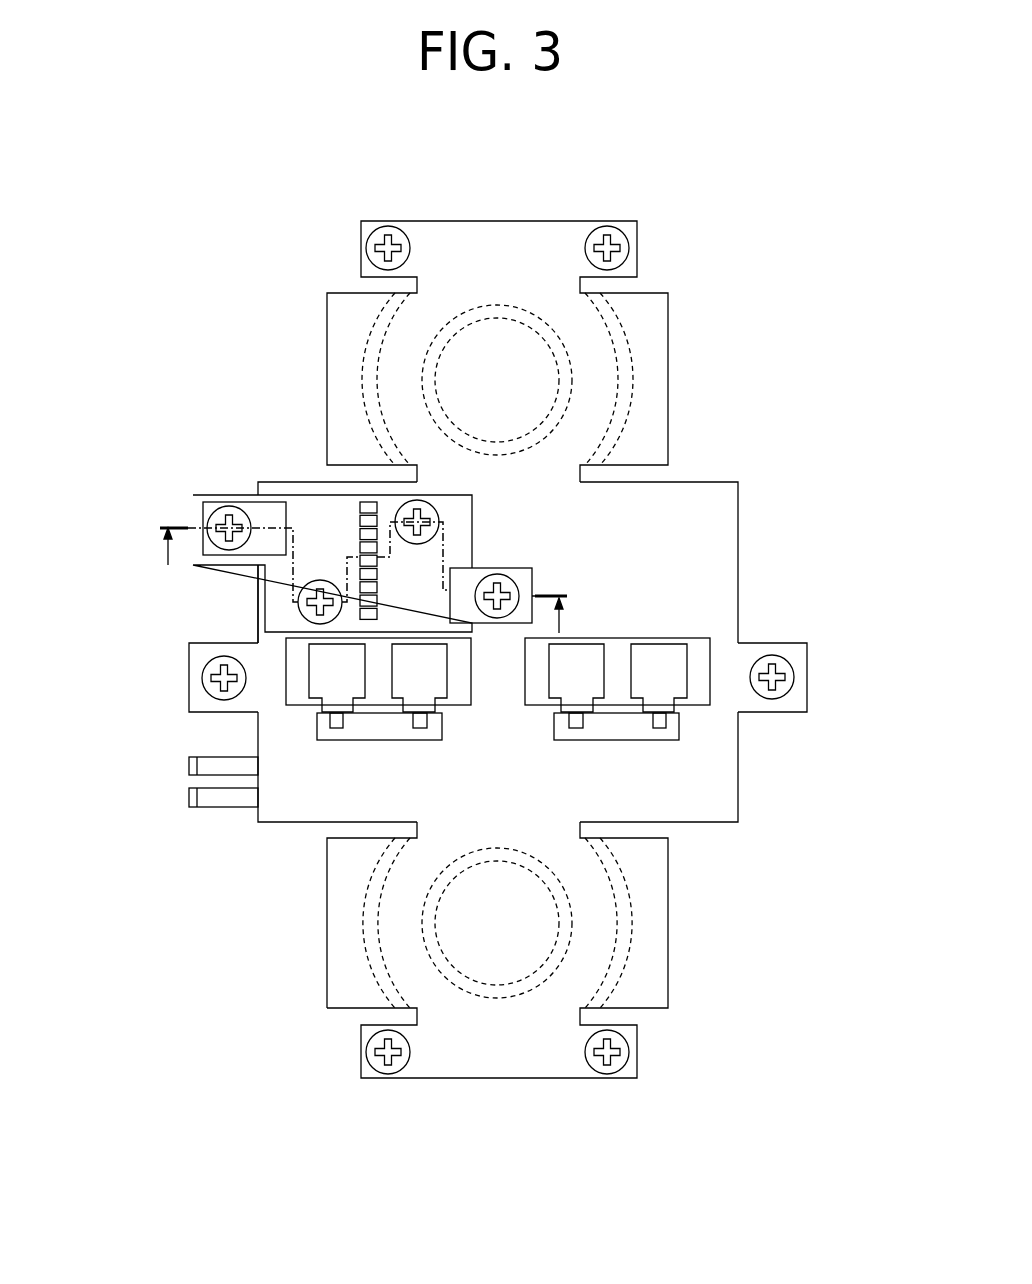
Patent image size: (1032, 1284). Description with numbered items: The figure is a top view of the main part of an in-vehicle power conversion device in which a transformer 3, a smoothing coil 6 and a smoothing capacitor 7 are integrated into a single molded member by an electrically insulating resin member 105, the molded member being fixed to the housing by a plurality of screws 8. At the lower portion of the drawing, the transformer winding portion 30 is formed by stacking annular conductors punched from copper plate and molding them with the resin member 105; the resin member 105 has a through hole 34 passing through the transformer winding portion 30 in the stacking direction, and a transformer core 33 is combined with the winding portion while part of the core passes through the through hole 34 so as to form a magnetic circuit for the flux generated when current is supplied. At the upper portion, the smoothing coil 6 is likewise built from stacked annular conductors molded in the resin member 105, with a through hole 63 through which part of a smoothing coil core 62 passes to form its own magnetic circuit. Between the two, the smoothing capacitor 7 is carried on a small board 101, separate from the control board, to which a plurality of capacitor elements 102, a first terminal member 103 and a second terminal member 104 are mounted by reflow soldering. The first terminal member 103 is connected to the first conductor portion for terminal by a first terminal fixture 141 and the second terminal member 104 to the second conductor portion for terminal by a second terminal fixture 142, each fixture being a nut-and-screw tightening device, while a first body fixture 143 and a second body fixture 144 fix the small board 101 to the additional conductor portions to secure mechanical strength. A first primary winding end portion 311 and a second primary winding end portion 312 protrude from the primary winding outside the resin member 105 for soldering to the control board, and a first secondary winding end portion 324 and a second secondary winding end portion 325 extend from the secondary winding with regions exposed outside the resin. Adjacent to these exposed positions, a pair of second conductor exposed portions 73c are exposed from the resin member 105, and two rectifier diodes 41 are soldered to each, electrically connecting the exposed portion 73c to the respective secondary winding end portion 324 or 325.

The transformer 3 is at (327, 1000).
The smoothing coil 6 is at (563, 357).
The smoothing capacitor 7 is at (258, 590).
The screws 8 is at (368, 230).
The transformer winding portion 30 is at (560, 900).
The transformer core 33 is at (670, 968).
The through hole 34 is at (570, 882).
The rectifier diodes 41 is at (317, 681).
The smoothing coil core 62 is at (668, 306).
The through hole 63 is at (567, 333).
The second conductor exposed portions 73c is at (293, 653).
The small board 101 is at (275, 493).
The capacitor elements 102 is at (400, 507).
The first terminal member 103 is at (203, 502).
The second terminal member 104 is at (508, 568).
The resin member 105 is at (713, 528).
The first terminal fixture 141 is at (193, 553).
The second terminal fixture 142 is at (533, 568).
The first body fixture 143 is at (363, 500).
The second body fixture 144 is at (300, 603).
The first primary winding end portion 311 is at (187, 797).
The second primary winding end portion 312 is at (187, 767).
The first secondary winding end portion 324 is at (330, 735).
The second secondary winding end portion 325 is at (640, 740).